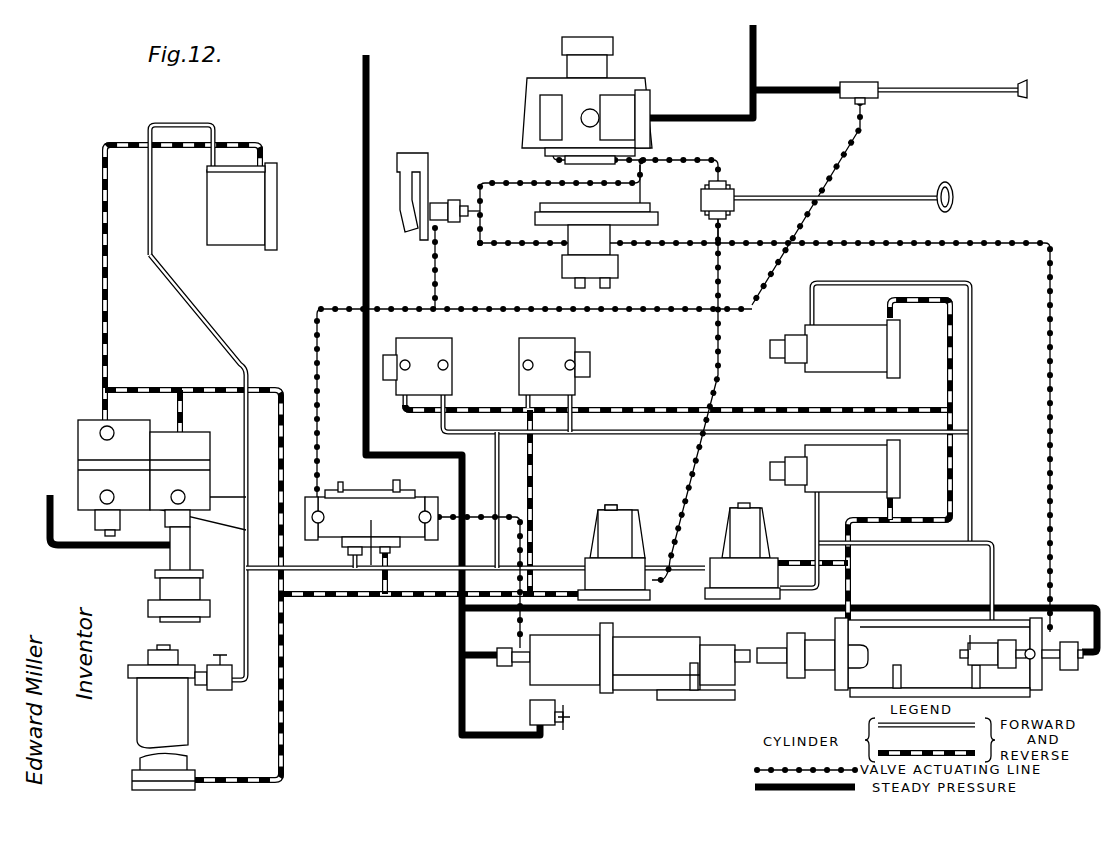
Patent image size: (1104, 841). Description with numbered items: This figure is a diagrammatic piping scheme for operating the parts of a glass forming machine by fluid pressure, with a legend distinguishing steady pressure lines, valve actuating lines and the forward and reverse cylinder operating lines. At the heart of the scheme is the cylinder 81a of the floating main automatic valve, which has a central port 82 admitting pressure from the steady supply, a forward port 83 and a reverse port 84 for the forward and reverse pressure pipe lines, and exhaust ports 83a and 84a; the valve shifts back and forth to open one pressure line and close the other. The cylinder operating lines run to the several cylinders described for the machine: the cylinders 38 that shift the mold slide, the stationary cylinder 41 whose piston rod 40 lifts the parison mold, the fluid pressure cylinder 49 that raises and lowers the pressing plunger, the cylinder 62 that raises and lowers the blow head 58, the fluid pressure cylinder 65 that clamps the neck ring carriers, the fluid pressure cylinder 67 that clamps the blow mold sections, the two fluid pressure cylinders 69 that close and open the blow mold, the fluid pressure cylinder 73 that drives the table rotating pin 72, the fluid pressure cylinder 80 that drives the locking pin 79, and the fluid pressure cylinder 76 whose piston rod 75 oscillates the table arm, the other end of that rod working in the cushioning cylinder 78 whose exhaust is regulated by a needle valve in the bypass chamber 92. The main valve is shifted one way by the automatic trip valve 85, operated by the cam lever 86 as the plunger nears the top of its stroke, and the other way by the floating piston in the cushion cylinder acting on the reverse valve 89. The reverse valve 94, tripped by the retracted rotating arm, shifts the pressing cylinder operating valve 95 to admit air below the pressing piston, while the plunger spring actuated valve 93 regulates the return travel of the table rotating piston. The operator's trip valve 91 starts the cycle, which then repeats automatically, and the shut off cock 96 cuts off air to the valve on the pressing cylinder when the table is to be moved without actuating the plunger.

The cylinders 38 is at (835, 409).
The piston rod 40 is at (170, 656).
The stationary cylinder 41 is at (186, 722).
The fluid pressure cylinder 49 is at (630, 195).
The blow head 58 is at (160, 625).
The cylinder 62 is at (192, 446).
The fluid pressure cylinder 65 is at (242, 222).
The fluid pressure cylinder 67 is at (90, 432).
The fluid pressure cylinders 69 is at (425, 350).
The pin 72 is at (745, 507).
The fluid pressure cylinder 73 is at (748, 532).
The piston rod 75 is at (780, 665).
The fluid pressure cylinder 76 is at (912, 640).
The cushioning cylinder 78 is at (583, 673).
The locking pin 79 is at (615, 506).
The fluid pressure cylinder 80 is at (625, 535).
The cylinder 81a is at (371, 565).
The central port 82 is at (372, 488).
The forward port 83 is at (345, 553).
The exhaust port 83a is at (340, 482).
The reverse port 84 is at (392, 553).
The exhaust port 84a is at (405, 472).
The automatic trip valve 85 is at (455, 222).
The cam lever 86 is at (408, 232).
The reverse valve 89 is at (505, 668).
The trip valve 91 is at (860, 88).
The bypass chamber 92 is at (548, 728).
The plunger spring actuated valve 93 is at (992, 648).
The reverse valve 94 is at (1072, 670).
The valve 95 is at (562, 105).
The shut off cock 96 is at (730, 205).